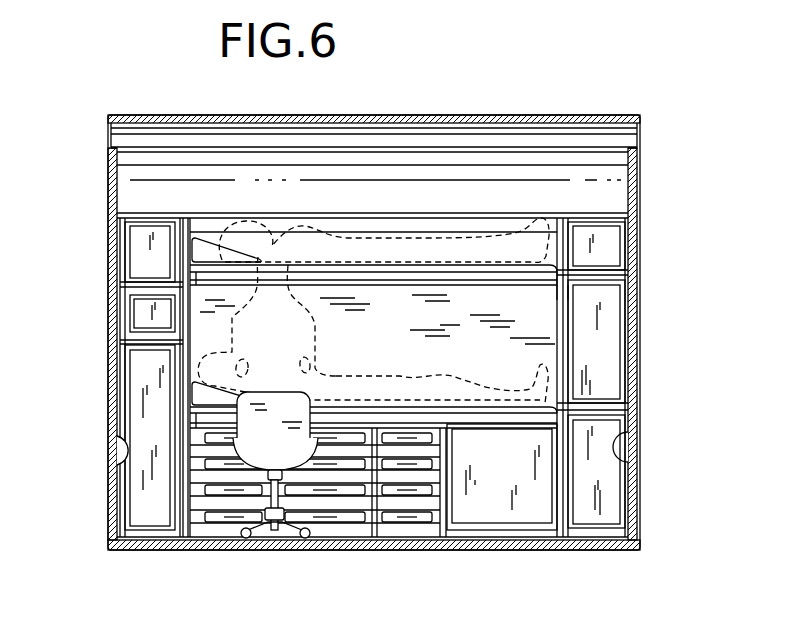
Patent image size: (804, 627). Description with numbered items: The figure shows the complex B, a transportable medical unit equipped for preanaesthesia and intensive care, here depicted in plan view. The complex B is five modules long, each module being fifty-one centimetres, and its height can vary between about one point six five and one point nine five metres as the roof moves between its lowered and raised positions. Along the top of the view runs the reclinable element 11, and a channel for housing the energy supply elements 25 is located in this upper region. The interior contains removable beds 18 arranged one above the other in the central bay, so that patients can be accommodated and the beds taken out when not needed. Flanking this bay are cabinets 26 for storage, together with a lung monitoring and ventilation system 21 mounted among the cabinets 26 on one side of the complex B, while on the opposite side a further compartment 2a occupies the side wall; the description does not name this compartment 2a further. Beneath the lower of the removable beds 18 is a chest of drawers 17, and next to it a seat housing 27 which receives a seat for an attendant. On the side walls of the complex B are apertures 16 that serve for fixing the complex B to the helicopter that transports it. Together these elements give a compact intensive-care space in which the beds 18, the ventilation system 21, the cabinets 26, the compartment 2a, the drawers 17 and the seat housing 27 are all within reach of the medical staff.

The complex B is at (538, 112).
The reclinable element 11 is at (117, 181).
The channel for housing the energy supply elements 25 is at (372, 213).
The cabinets 26 is at (135, 257).
The lung monitoring and ventilation system 21 is at (140, 314).
The apertures for fixing the complex to the helicopter 16 is at (123, 450).
The side cabinet 2a is at (630, 317).
The removable beds 18 is at (482, 283).
The chest of drawers 17 is at (337, 515).
The seat housing 27 is at (498, 512).